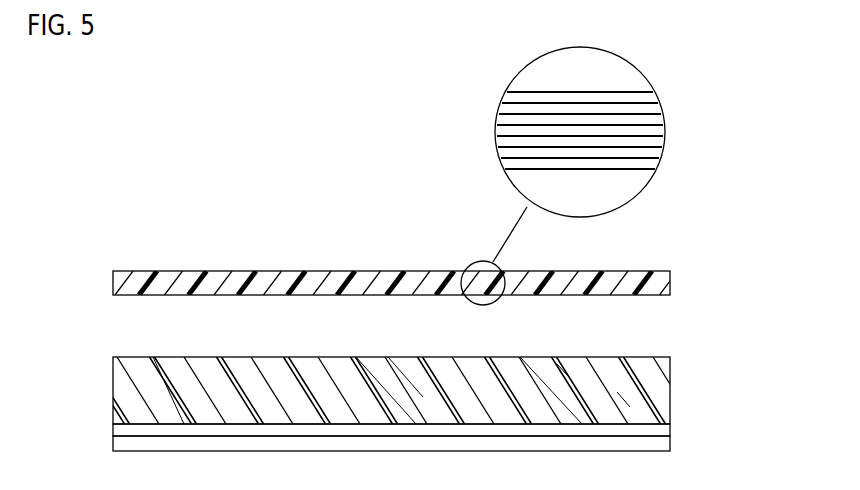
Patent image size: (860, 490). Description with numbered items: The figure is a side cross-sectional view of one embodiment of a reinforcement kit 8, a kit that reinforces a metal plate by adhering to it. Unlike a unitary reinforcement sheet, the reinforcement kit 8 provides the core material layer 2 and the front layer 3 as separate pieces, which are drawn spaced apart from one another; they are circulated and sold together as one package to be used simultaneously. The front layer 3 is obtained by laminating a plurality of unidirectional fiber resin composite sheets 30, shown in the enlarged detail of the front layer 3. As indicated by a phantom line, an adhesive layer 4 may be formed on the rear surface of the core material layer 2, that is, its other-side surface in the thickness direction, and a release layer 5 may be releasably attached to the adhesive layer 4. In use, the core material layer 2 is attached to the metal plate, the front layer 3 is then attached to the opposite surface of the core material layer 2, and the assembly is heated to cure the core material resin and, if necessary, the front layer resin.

The core material layer 2 is at (672, 382).
The front layer 3 is at (672, 279).
The unidirectional fiber resin composite sheets 30 is at (631, 141).
The adhesive layer 4 is at (113, 432).
The release layer 5 is at (113, 443).
The reinforcement kit 8 is at (773, 245).